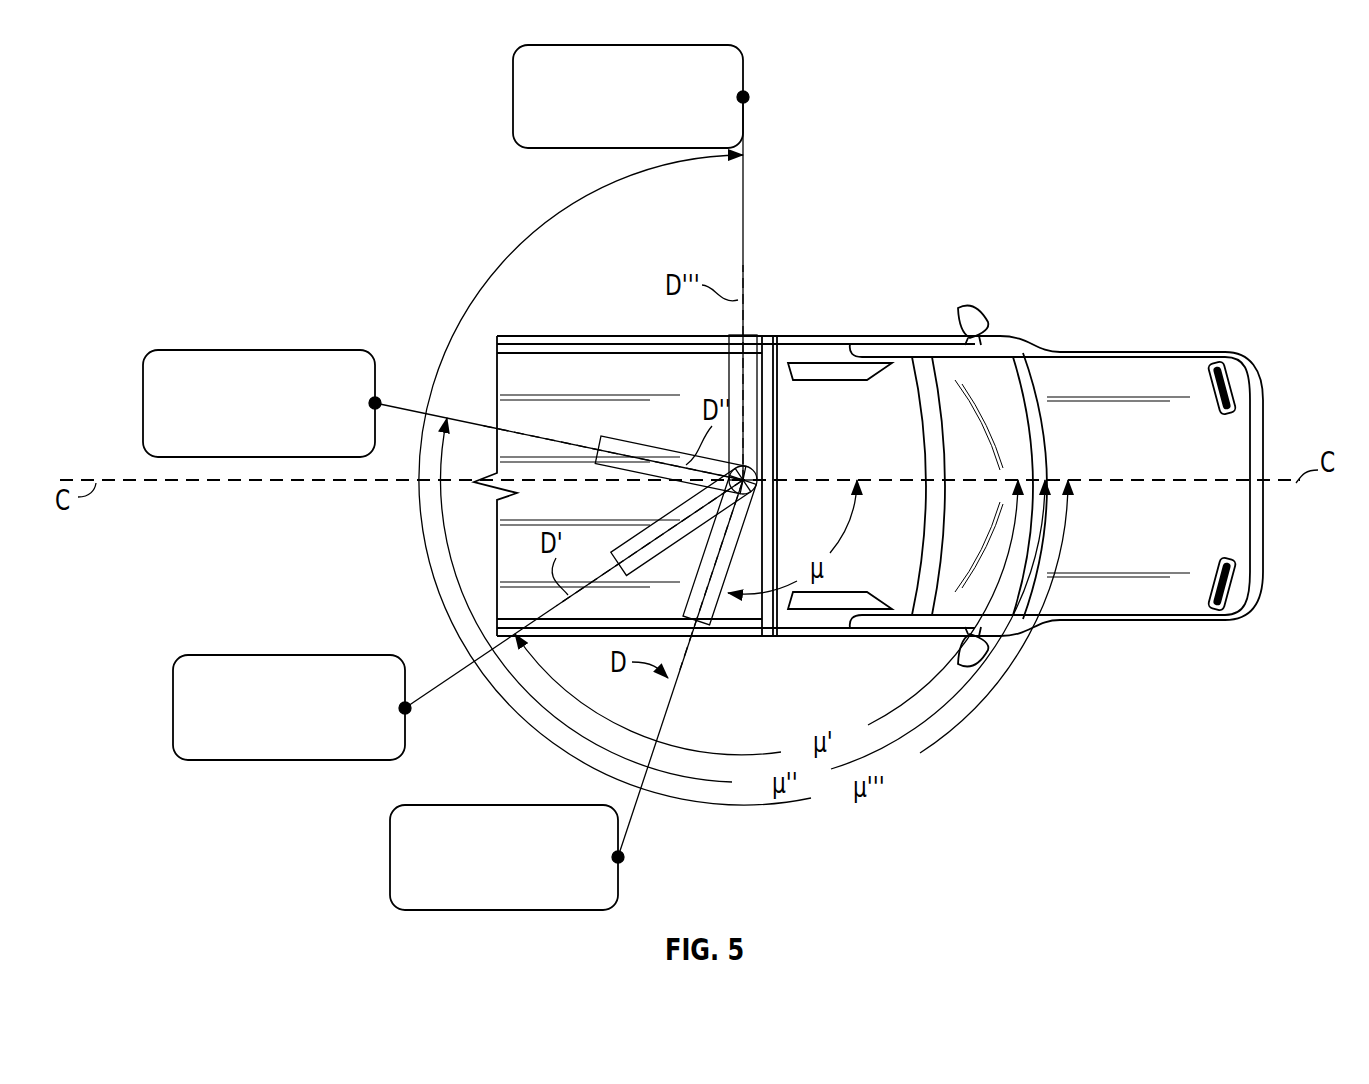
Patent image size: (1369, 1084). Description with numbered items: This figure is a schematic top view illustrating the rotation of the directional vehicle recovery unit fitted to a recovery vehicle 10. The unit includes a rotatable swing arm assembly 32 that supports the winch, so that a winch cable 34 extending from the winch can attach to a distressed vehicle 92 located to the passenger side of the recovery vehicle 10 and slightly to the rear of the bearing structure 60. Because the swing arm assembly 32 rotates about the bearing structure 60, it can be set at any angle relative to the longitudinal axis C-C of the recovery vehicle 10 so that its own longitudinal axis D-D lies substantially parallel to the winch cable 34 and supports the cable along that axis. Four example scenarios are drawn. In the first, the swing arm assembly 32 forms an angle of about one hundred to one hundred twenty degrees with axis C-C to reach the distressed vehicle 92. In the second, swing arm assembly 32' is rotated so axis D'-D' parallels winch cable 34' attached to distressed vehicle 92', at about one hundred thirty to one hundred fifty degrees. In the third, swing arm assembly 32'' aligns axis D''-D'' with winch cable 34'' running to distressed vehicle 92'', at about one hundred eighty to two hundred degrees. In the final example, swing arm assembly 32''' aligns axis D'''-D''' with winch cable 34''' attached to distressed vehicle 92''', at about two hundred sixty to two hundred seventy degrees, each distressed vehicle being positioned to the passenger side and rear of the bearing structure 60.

The recovery vehicle 10 is at (1110, 345).
The swing arm assembly 32 is at (747, 575).
The swing arm assembly 32' is at (650, 542).
The swing arm assembly 32'' is at (613, 425).
The swing arm assembly 32''' is at (776, 372).
The winch cable 34 is at (677, 671).
The winch cable 34' is at (571, 597).
The winch cable 34'' is at (556, 413).
The winch cable 34''' is at (784, 285).
The bearing structure 60 is at (760, 483).
The distressed vehicle 92 is at (504, 876).
The distressed vehicle 92' is at (289, 727).
The distressed vehicle 92'' is at (259, 387).
The distressed vehicle 92''' is at (585, 96).